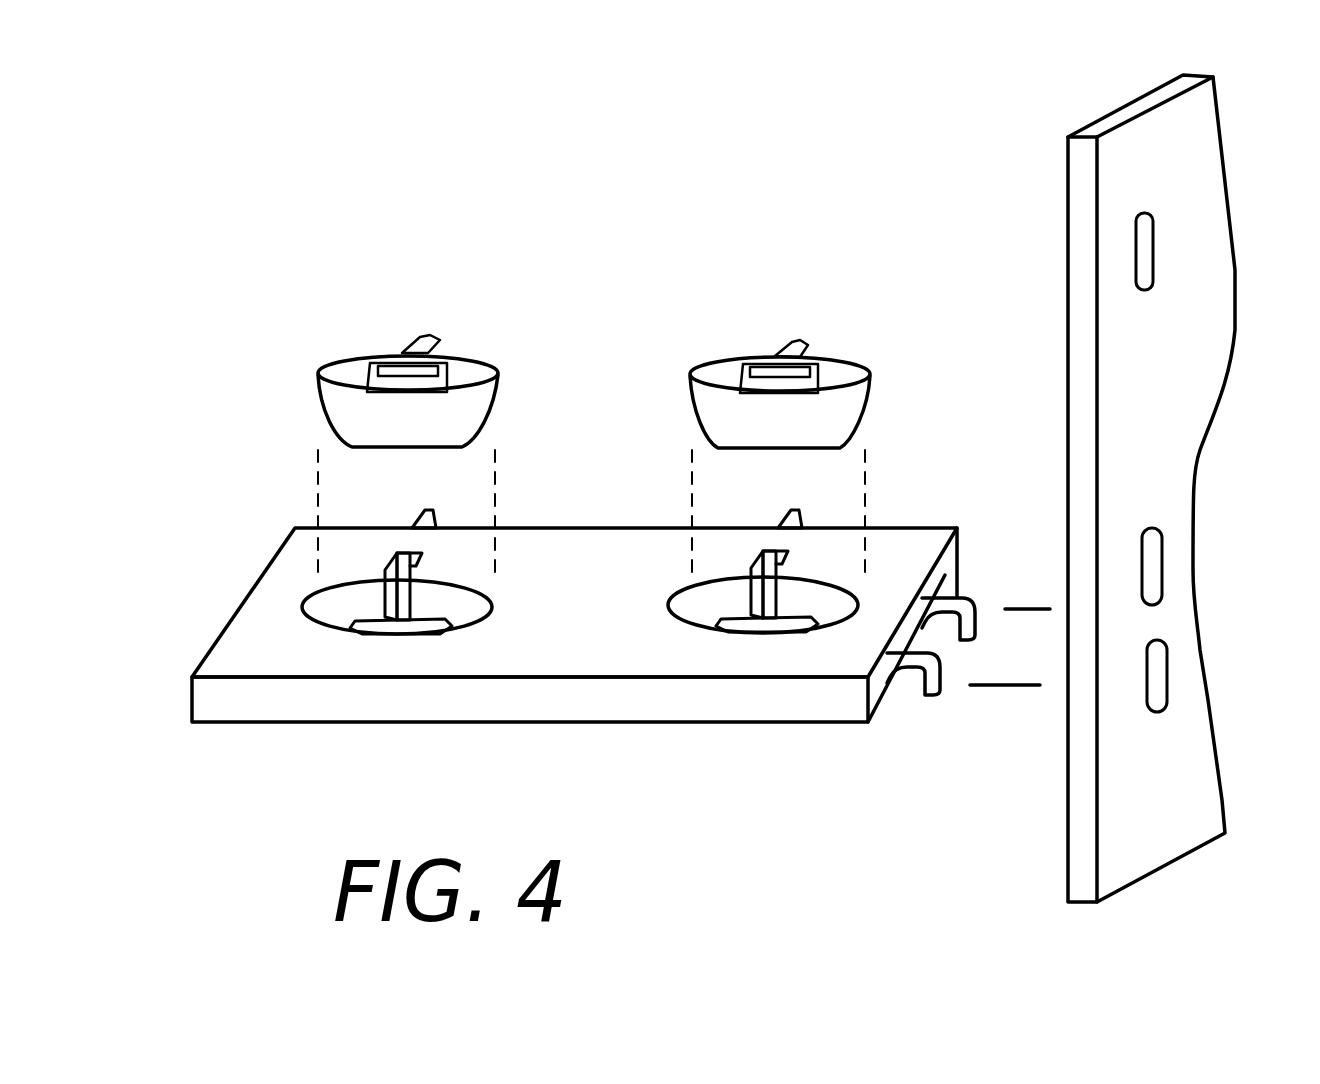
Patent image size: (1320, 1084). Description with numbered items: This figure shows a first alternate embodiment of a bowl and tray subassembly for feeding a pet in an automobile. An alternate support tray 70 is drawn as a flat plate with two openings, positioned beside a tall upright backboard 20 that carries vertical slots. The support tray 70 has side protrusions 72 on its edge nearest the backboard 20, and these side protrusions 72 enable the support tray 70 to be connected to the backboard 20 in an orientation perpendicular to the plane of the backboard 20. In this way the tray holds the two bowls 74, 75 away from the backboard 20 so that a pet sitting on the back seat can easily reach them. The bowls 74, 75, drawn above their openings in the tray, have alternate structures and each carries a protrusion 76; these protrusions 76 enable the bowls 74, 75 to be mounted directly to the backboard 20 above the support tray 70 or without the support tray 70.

The backboard 20 is at (1083, 267).
The support tray 70 is at (240, 385).
The side protrusions 72 is at (922, 695).
The bowl 74 is at (350, 357).
The bowl 75 is at (695, 368).
The protrusions 76 is at (437, 342).